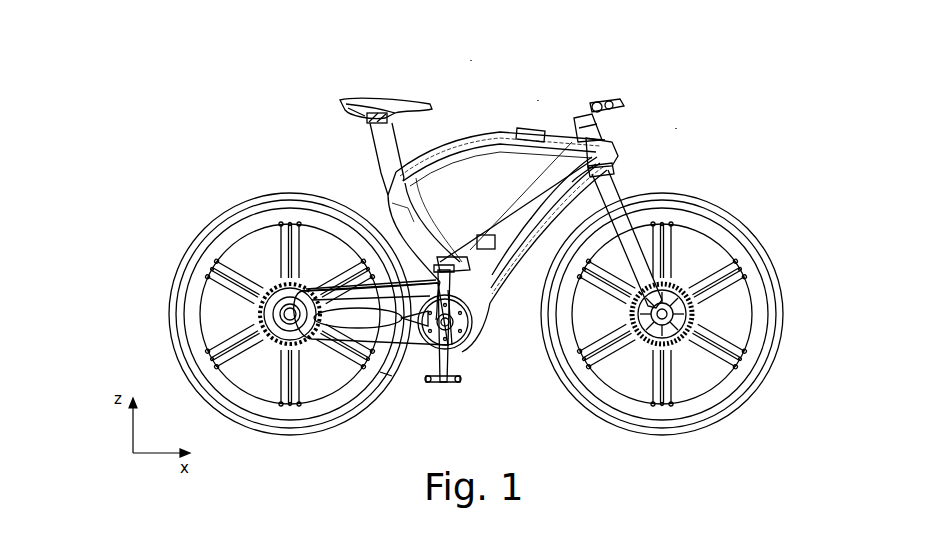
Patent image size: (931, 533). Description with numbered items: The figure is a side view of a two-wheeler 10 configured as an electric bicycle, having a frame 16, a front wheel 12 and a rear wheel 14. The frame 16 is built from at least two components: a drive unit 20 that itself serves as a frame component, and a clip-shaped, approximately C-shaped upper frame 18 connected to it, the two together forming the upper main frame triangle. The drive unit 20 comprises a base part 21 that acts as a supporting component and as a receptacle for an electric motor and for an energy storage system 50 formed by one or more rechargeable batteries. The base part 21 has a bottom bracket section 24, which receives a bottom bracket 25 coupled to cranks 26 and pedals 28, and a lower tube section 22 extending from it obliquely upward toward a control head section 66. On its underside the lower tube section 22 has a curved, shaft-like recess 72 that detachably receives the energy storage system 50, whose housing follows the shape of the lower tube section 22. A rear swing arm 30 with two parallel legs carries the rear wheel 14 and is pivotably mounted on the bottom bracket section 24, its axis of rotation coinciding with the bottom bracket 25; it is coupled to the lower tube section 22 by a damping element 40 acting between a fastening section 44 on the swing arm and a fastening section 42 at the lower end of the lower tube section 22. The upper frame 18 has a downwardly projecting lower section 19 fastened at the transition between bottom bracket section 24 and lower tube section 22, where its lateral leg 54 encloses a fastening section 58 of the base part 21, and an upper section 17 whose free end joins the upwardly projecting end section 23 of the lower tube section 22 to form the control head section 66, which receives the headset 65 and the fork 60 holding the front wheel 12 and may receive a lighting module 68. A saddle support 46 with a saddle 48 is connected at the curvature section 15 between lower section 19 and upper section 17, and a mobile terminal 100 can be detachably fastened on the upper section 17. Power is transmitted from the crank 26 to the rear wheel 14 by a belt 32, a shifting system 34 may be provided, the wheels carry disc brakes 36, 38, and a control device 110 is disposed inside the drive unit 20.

The two-wheeler 10 is at (471, 60).
The front wheel 12 is at (736, 214).
The rear wheel 14 is at (262, 194).
The curvature section 15 is at (402, 180).
The frame 16 is at (538, 100).
The upper section 17 is at (570, 137).
The upper frame 18 is at (470, 130).
The lower section 19 is at (390, 200).
The drive unit 20 is at (516, 294).
The base part 21 is at (510, 214).
The lower tube section 22 is at (473, 226).
The end section 23 is at (518, 148).
The bottom bracket section 24 is at (482, 344).
The bottom bracket 25 is at (430, 377).
The crank 26 is at (457, 380).
The pedals 28 is at (456, 386).
The rear swing arm 30 is at (331, 300).
The belt 32 is at (386, 376).
The shifting system 34 is at (265, 352).
The brake 36 is at (640, 320).
The brake 38 is at (286, 300).
The damping element 40 is at (428, 278).
The fastening section 42 is at (470, 250).
The fastening section 44 is at (352, 290).
The saddle support 46 is at (378, 150).
The saddle 48 is at (372, 102).
The energy storage system 50 is at (547, 197).
The lateral leg 54 is at (382, 212).
The fastening section 58 is at (484, 322).
The fork 60 is at (625, 180).
The headset 65 is at (612, 126).
The control head section 66 is at (575, 166).
The lighting module 68 is at (676, 128).
The recess 72 is at (531, 218).
The mobile terminal 100 is at (530, 132).
The control device 110 is at (500, 250).